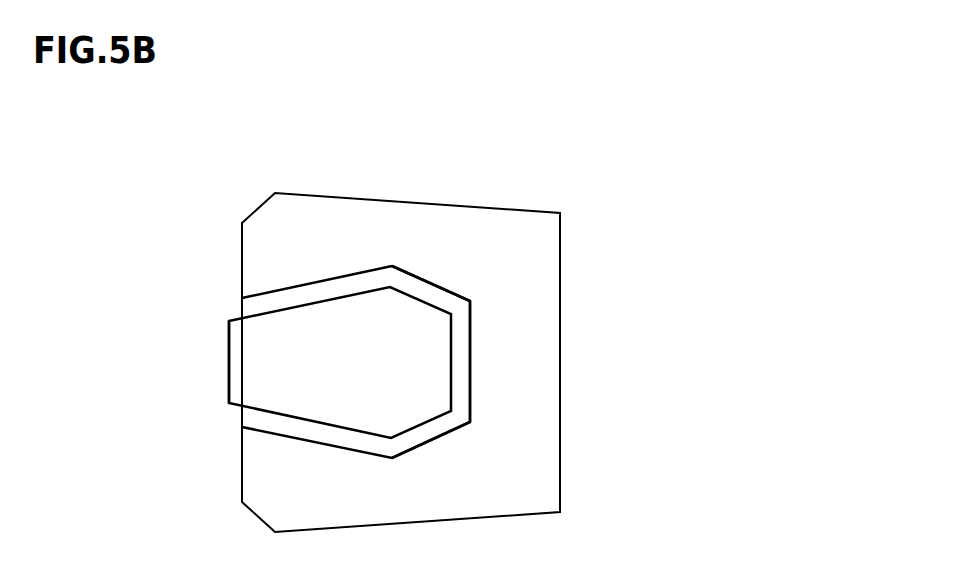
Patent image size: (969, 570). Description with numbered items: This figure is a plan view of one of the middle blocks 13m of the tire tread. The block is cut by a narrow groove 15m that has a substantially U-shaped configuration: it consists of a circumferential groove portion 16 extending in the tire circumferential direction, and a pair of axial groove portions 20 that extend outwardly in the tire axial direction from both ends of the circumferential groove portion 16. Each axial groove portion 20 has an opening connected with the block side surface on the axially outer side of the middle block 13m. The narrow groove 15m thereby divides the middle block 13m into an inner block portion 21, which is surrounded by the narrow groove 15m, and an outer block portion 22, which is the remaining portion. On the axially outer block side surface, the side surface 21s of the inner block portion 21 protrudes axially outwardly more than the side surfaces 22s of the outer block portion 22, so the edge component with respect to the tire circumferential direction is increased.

The middle block 13m is at (400, 120).
The outer block portion 22 is at (308, 232).
The inner block portion 21 is at (346, 358).
The side surfaces of the outer block portion 22s is at (242, 258).
The side surface of the inner block portion 21s is at (228, 362).
The narrow groove 15m is at (652, 271).
The axial groove portion 20 is at (433, 280).
The circumferential groove portion 16 is at (472, 363).